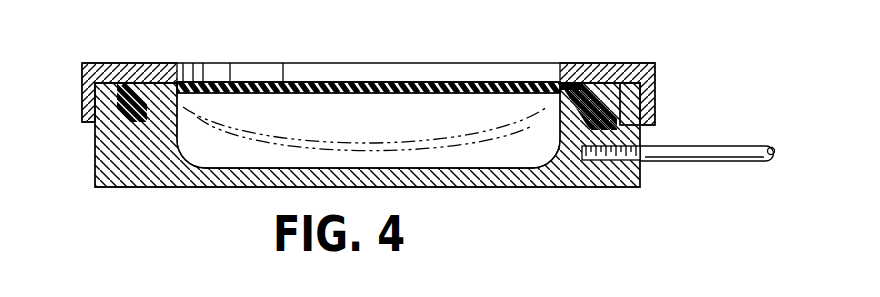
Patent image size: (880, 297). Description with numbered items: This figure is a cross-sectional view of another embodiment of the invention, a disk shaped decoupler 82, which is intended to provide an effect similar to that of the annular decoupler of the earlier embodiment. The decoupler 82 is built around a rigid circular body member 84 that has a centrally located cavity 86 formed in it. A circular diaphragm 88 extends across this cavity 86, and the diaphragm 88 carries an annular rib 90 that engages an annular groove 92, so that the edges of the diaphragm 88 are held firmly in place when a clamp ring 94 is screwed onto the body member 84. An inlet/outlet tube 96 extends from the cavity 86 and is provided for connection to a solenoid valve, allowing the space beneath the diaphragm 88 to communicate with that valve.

The decoupler 82 is at (411, 123).
The body member 84 is at (515, 190).
The cavity 86 is at (238, 168).
The diaphragm 88 is at (364, 82).
The annular rib 90 is at (129, 122).
The annular groove 92 is at (183, 102).
The clamp ring 94 is at (605, 63).
The inlet/outlet tube 96 is at (688, 146).